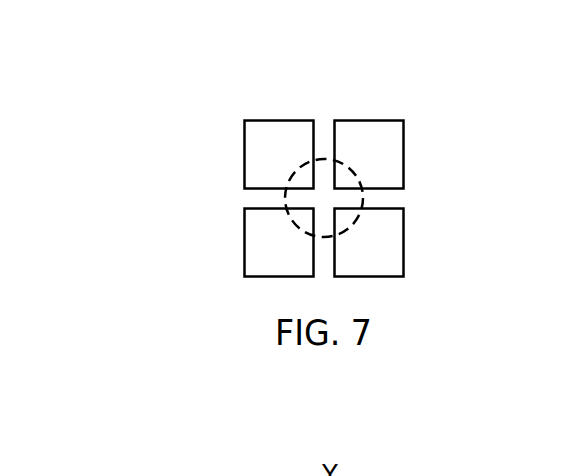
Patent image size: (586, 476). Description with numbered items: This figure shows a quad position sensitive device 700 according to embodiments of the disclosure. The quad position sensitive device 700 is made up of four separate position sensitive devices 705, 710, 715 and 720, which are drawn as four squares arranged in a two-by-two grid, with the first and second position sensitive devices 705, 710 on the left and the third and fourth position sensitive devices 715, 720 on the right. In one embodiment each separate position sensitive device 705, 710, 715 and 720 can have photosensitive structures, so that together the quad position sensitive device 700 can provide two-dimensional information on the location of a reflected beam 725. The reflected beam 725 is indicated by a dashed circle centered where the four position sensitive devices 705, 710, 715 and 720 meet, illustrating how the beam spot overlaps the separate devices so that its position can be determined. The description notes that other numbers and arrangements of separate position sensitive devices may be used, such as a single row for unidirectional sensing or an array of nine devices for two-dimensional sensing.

The quad position sensitive device 700 is at (179, 62).
The position sensitive device 705 is at (253, 152).
The position sensitive device 710 is at (253, 245).
The position sensitive device 715 is at (395, 150).
The position sensitive device 720 is at (393, 243).
The reflected beam 725 is at (303, 163).